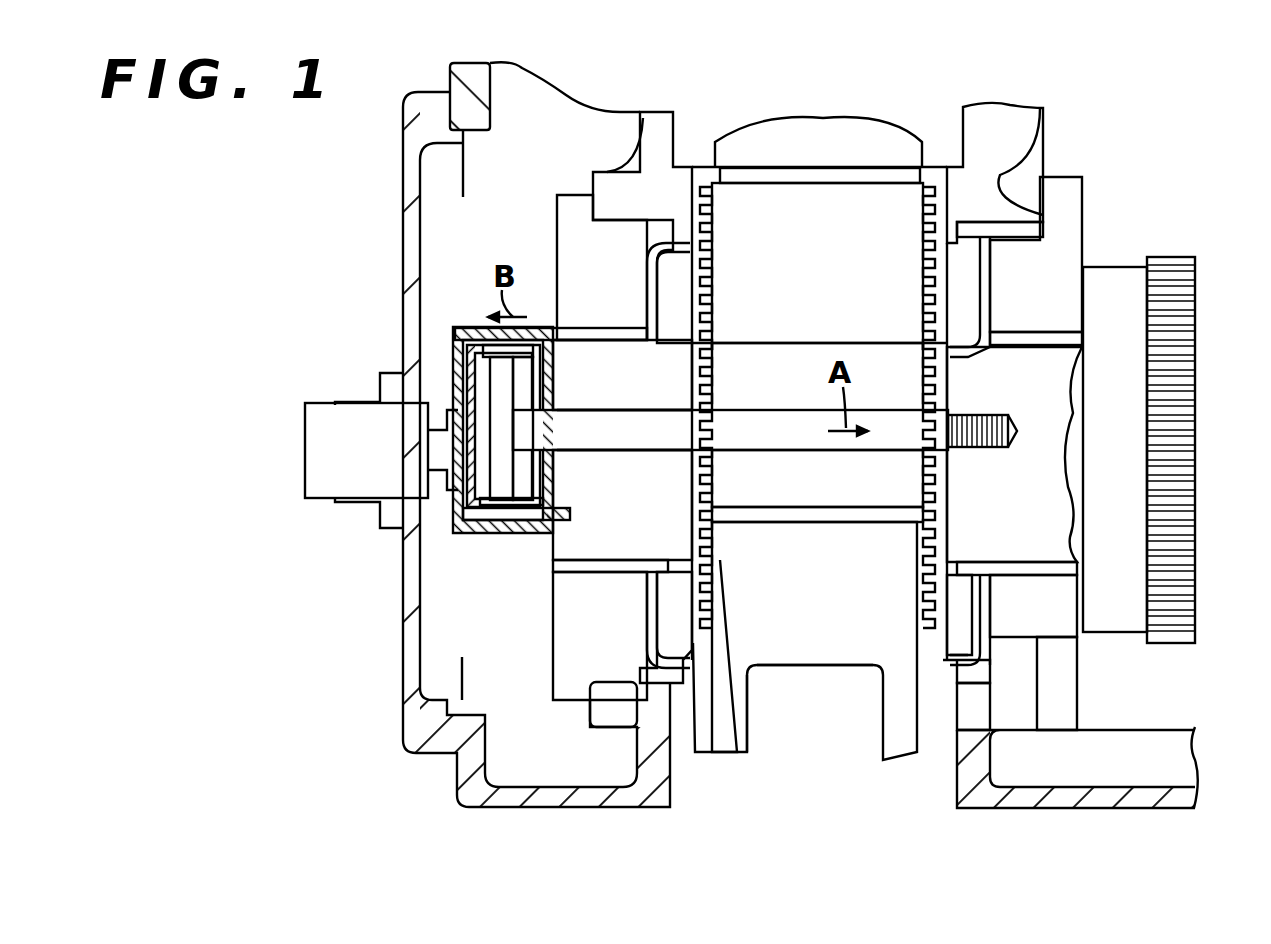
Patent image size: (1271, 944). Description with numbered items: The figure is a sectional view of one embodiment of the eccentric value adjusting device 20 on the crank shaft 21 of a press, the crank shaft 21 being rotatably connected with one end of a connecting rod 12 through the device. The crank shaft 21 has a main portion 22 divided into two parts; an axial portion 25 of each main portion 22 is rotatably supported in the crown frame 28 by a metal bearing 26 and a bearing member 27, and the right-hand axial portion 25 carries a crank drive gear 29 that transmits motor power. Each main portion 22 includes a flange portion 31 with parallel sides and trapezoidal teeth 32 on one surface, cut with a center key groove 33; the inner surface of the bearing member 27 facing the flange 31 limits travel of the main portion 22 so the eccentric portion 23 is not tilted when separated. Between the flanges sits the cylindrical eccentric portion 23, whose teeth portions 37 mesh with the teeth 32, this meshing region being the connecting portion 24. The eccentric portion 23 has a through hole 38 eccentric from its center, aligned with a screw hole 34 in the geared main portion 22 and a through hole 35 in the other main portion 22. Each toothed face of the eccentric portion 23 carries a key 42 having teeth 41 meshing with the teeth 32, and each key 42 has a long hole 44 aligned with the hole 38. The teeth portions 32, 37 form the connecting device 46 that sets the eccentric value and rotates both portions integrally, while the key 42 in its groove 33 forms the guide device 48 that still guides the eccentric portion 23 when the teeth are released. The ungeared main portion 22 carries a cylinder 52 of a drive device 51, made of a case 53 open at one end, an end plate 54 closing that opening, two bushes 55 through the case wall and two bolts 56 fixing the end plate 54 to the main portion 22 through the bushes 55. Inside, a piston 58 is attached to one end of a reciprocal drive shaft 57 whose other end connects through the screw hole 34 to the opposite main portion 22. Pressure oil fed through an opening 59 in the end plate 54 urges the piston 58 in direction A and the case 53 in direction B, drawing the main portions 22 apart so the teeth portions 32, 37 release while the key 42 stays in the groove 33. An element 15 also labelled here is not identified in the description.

The connecting rod 12 is at (737, 755).
The hub cap 15 is at (795, 165).
The eccentric value adjusting device 20 is at (819, 407).
The crank shaft 21 is at (1177, 419).
The main portion 22 is at (560, 300).
The eccentric portion 23 is at (853, 207).
The connecting portion 24 is at (688, 150).
The axial portion 25 is at (553, 648).
The metal bearing 26 is at (600, 562).
The bearing member 27 is at (573, 690).
The crown frame 28 is at (1148, 790).
The crank drive gear 29 is at (1177, 273).
The flange portion 31 is at (618, 690).
The trapezoidal teeth 32 is at (918, 560).
The center key groove 33 is at (748, 712).
The screw hole 34 is at (1013, 415).
The through hole 35 is at (779, 426).
The teeth portions 37 is at (635, 210).
The through hole 38 is at (815, 345).
The teeth 41 is at (738, 165).
The key 42 is at (703, 165).
The long hole 44 is at (712, 360).
The connecting device 46 is at (905, 615).
The guide device 48 is at (812, 673).
The drive device 51 is at (437, 380).
The cylinder 52 is at (442, 535).
The case 53 is at (530, 535).
The end plate 54 is at (465, 492).
The bushes 55 is at (492, 535).
The bolts 56 is at (452, 517).
The reciprocal drive shaft 57 is at (628, 425).
The piston 58 is at (460, 350).
The opening 59 is at (305, 450).